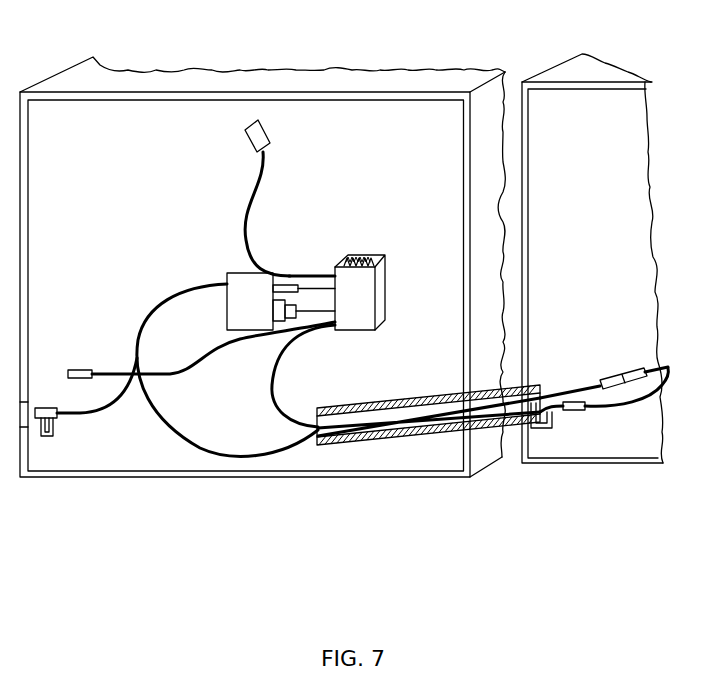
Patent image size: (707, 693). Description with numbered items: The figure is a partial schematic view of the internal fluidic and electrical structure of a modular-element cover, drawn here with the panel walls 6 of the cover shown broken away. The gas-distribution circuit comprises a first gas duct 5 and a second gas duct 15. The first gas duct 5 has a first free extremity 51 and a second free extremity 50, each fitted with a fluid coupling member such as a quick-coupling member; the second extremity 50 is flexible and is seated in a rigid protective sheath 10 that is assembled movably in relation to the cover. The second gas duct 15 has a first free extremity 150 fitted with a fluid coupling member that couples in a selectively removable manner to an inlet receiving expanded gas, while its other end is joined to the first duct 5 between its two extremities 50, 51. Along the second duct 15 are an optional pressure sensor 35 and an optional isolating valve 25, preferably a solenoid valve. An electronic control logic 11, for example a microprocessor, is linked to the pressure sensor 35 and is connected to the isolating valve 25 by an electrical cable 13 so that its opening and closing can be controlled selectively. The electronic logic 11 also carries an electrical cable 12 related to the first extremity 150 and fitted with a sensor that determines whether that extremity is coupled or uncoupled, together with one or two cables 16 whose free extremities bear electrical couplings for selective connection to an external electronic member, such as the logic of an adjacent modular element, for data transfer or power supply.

The first gas duct 5 is at (75, 416).
The wall panel 6 is at (41, 98).
The rigid protective sheath 10 is at (490, 391).
The electronic control logic 11 is at (363, 295).
The electrical cable 12 is at (315, 298).
The electrical cable 13 is at (328, 272).
The second gas duct 15 is at (256, 196).
The cables 16 is at (173, 375).
The isolating valve 25 is at (277, 315).
The pressure sensor 35 is at (286, 284).
The second free extremity 50 is at (546, 402).
The first free extremity 51 is at (36, 425).
The first free extremity 150 is at (262, 118).